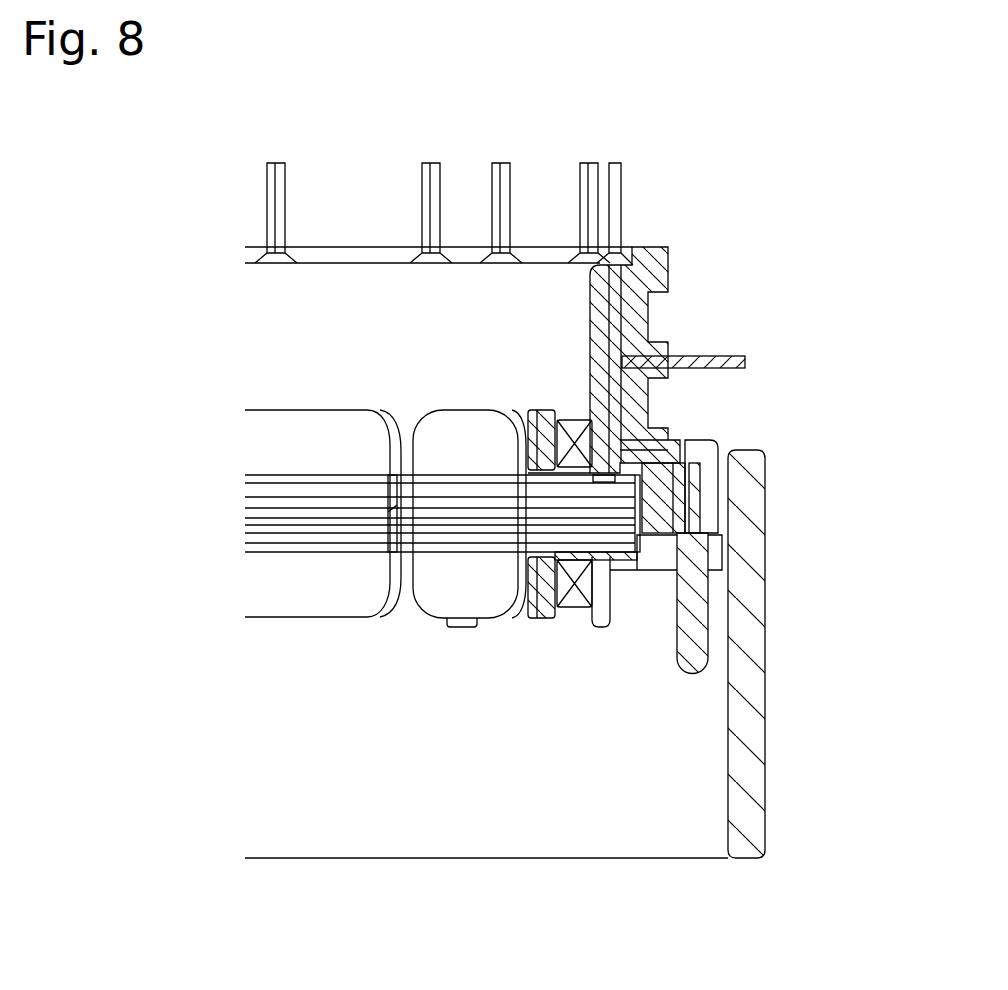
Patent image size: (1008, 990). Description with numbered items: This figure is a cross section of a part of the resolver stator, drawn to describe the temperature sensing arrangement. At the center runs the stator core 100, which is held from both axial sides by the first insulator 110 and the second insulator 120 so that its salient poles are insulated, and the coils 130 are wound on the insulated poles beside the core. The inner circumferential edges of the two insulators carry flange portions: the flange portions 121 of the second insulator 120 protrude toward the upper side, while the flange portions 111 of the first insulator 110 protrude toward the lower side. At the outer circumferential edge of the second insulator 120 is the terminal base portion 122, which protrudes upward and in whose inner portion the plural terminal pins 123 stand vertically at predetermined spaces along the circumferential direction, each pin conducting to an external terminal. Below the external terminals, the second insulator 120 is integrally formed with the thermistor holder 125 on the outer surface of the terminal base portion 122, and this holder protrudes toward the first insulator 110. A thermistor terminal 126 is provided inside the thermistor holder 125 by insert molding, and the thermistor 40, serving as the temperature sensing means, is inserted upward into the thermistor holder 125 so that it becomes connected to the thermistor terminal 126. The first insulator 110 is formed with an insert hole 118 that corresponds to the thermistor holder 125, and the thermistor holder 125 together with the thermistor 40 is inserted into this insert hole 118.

The terminal pins 123 is at (440, 210).
The terminal base portion 122 is at (338, 283).
The second insulator 120 is at (650, 313).
The thermistor terminal 126 is at (703, 355).
The thermistor holder 125 is at (703, 453).
The insert hole 118 is at (655, 555).
The thermistor 40 is at (677, 643).
The first insulator 110 is at (766, 689).
The flange portions 121 is at (300, 440).
The flange portions 111 is at (312, 600).
The stator core 100 is at (456, 473).
The coils 130 is at (572, 608).